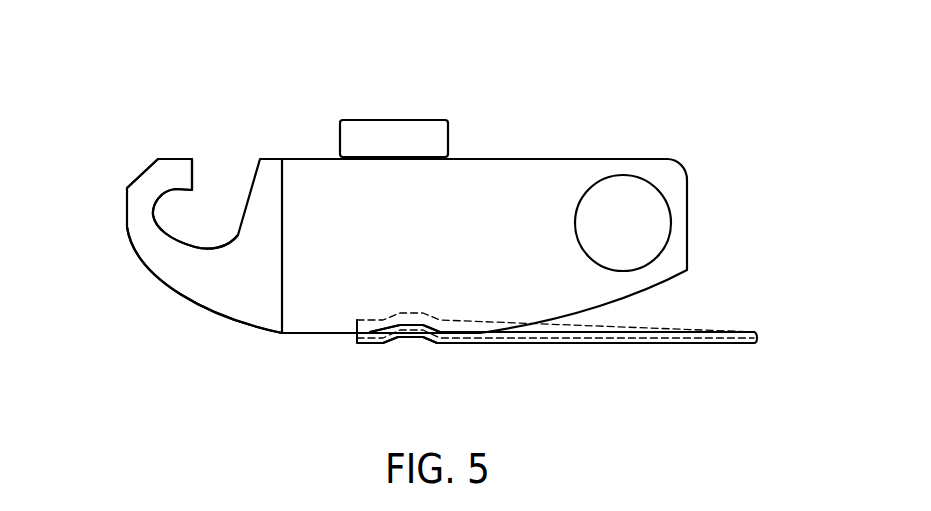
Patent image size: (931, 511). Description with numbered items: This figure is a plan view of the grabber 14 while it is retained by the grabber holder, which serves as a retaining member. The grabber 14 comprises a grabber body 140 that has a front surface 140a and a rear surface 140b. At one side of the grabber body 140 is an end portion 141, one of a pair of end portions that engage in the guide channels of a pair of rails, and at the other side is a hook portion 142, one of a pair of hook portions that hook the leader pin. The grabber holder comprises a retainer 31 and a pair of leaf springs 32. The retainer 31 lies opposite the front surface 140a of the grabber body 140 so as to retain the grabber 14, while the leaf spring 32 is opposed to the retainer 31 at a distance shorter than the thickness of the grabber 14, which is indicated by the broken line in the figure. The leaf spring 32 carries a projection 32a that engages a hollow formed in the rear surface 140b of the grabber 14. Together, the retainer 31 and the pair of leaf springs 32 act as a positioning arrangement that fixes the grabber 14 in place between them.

The grabber 14 is at (409, 218).
The grabber body 140 is at (318, 320).
The front surface 140a is at (508, 157).
The rear surface 140b is at (287, 331).
The end portion 141 is at (652, 220).
The hook portion 142 is at (148, 183).
The retainer 31 is at (397, 122).
The leaf spring 32 is at (695, 328).
The projection 32a is at (403, 318).